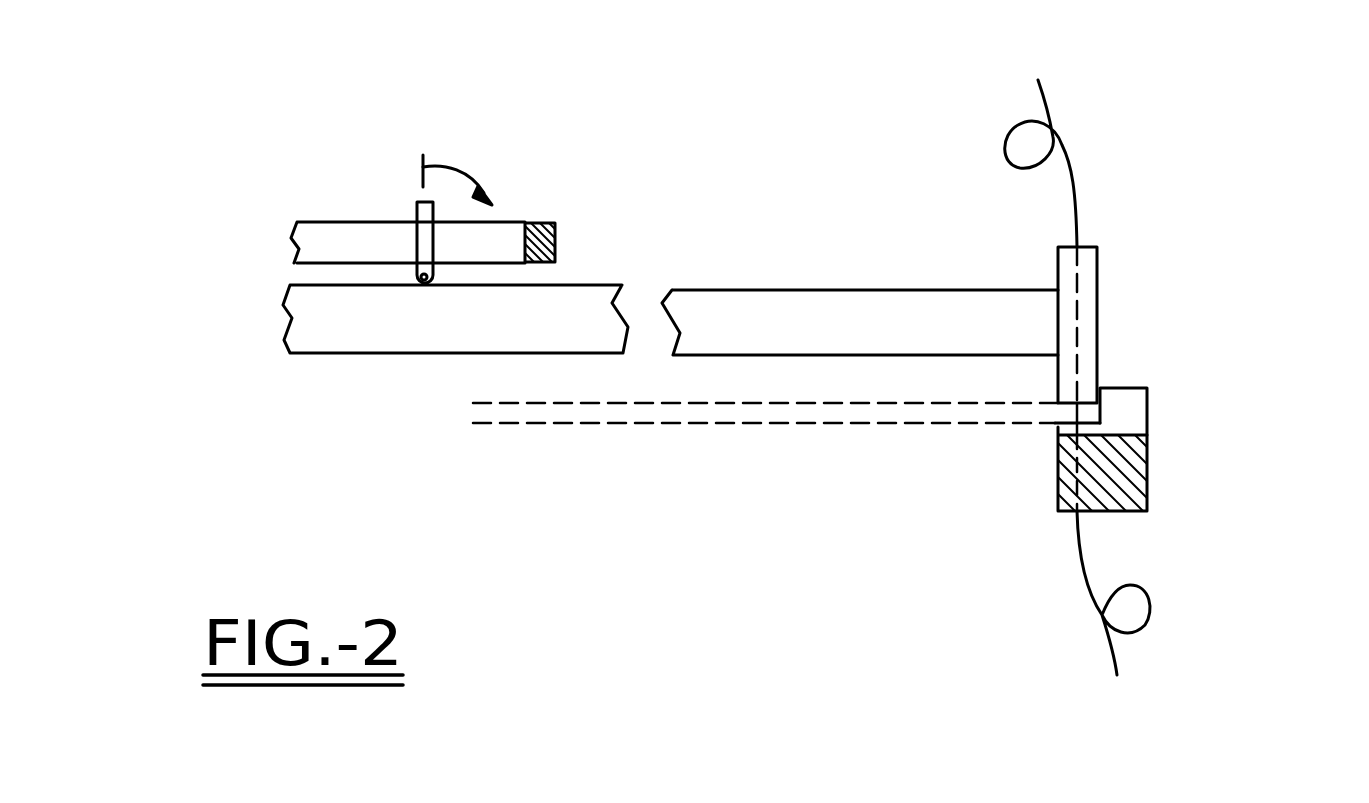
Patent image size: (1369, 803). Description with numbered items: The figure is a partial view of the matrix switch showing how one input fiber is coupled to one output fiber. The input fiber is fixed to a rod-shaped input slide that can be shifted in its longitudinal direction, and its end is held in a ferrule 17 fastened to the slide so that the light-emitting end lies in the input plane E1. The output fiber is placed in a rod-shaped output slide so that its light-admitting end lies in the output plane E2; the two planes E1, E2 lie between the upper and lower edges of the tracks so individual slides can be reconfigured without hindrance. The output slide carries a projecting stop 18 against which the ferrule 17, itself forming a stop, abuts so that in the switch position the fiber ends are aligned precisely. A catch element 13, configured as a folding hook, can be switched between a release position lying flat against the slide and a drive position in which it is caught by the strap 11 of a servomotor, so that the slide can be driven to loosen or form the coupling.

The strap 11 is at (537, 227).
The catch element 13 is at (417, 203).
The ferrule 17 is at (1093, 272).
The projecting stop 18 is at (1128, 390).
The input plane E1 is at (533, 402).
The output plane E2 is at (537, 422).